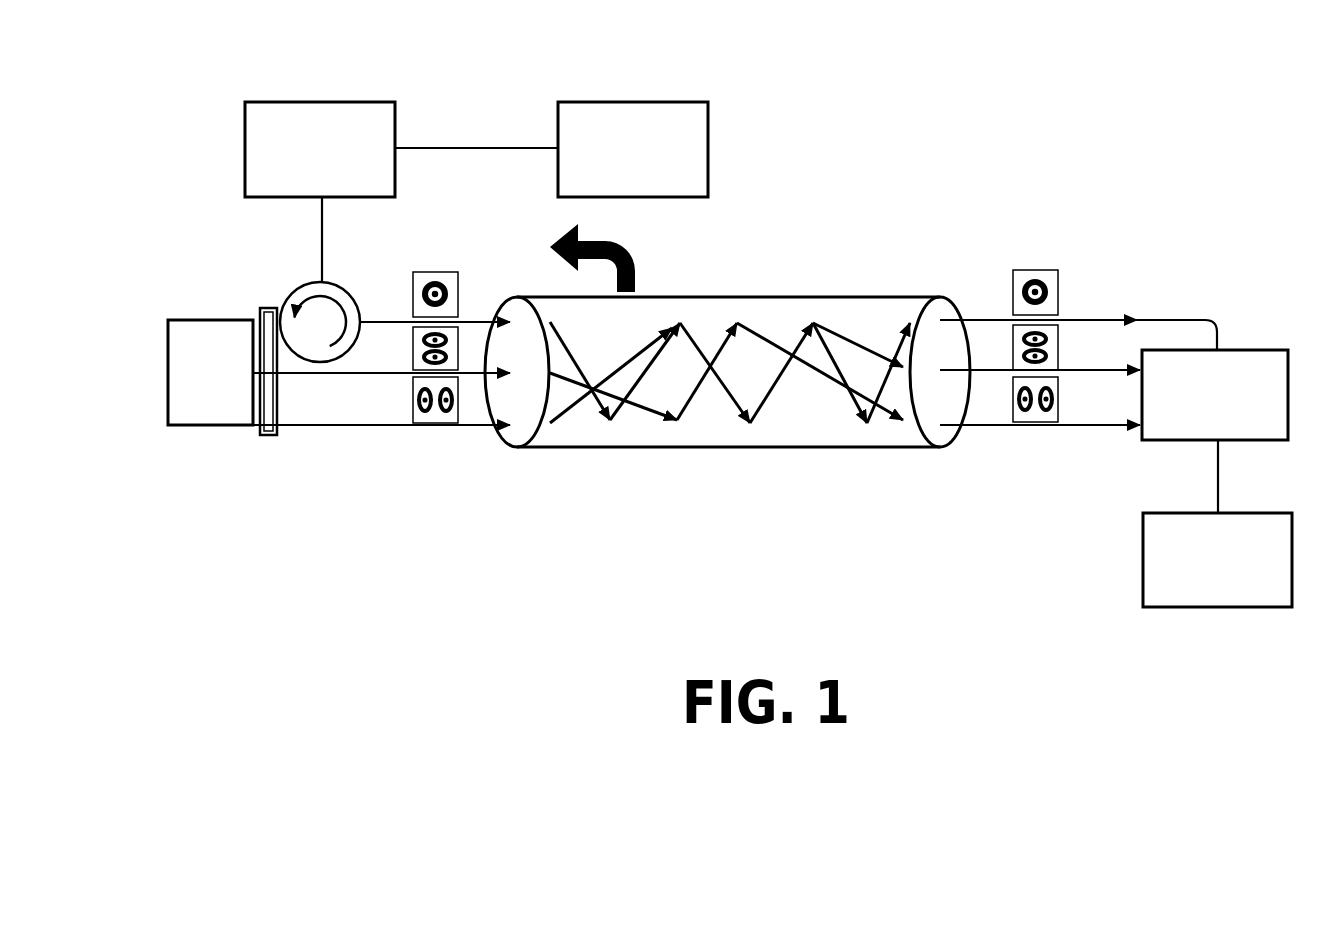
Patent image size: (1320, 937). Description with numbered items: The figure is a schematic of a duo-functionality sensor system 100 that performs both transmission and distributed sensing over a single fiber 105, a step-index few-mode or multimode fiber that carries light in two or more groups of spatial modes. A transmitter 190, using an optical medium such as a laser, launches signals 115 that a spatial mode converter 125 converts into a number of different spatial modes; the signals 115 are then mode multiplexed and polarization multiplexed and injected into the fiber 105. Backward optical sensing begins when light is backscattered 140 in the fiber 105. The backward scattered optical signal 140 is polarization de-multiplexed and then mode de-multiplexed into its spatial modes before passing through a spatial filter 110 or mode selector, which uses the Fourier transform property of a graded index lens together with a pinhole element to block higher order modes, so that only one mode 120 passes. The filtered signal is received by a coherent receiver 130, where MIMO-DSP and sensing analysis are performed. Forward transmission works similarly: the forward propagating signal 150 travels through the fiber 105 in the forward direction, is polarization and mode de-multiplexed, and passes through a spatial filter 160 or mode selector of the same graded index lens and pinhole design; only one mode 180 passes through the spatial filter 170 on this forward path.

The duo-functionality sensor system 100 is at (1003, 119).
The fiber 105 is at (567, 449).
The spatial filter 110 is at (303, 102).
The signals 115 is at (290, 428).
The mode 120 is at (425, 148).
The spatial mode converter 125 is at (270, 437).
The coherent receiver 130 is at (708, 148).
The backward scattered optical signal 140 is at (630, 267).
The forward propagating signal 150 is at (708, 427).
The spatial filter 160 is at (1238, 350).
The spatial filter 170 is at (1143, 573).
The mode 180 is at (1218, 480).
The transmitter 190 is at (203, 320).